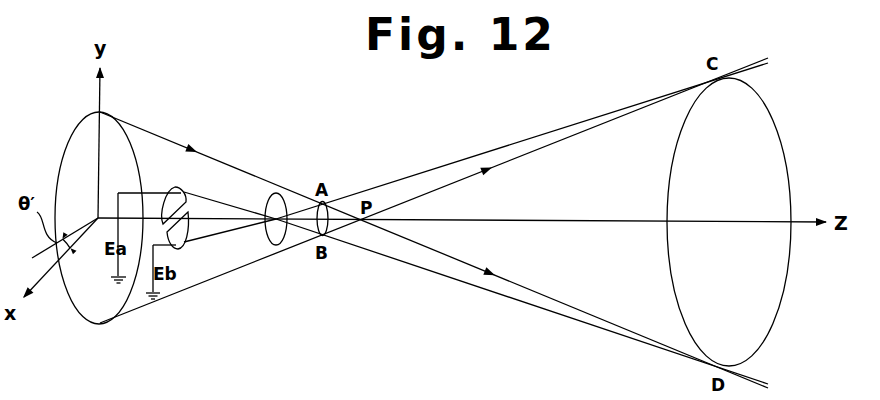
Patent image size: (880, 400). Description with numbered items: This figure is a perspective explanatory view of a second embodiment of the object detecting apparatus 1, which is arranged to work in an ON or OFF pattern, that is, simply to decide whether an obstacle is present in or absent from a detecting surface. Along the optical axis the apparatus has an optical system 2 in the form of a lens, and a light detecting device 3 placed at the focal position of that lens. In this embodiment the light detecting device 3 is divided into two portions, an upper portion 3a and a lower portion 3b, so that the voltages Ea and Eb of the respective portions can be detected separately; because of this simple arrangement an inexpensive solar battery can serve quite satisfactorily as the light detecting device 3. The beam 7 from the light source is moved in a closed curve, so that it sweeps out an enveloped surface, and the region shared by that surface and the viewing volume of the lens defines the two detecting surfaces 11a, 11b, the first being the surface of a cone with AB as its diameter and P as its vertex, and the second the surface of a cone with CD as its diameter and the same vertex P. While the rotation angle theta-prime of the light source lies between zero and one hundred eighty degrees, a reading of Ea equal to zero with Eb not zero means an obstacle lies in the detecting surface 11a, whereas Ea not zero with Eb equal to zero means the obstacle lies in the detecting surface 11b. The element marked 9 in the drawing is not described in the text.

The object detecting apparatus 1 is at (338, 157).
The optical system 2 is at (272, 192).
The light detecting device 3 is at (224, 263).
The upper portion of light detecting device 3a is at (185, 203).
The lower portion of light detecting device 3b is at (180, 233).
The beam 7 is at (174, 138).
The optical axis 9 is at (592, 222).
The detecting surface 11a is at (347, 227).
The detecting surface 11b is at (453, 260).